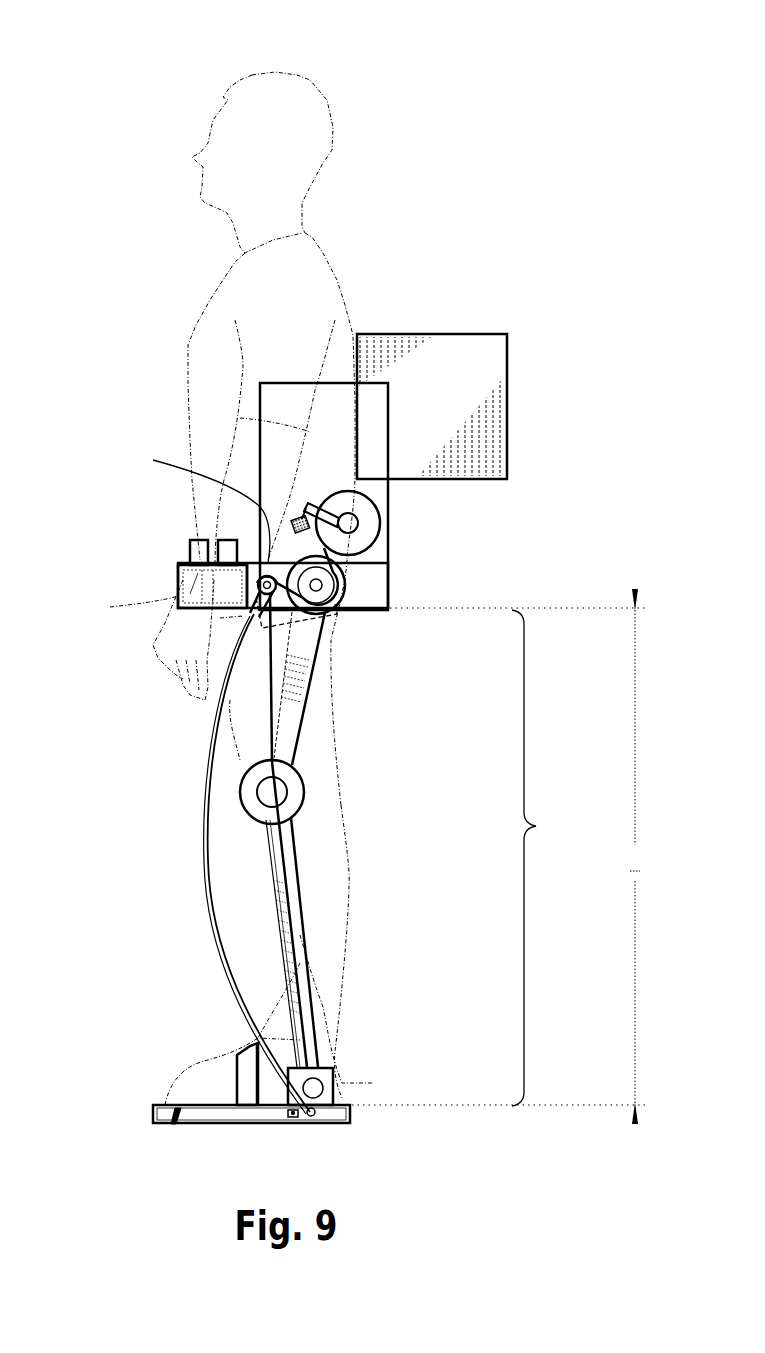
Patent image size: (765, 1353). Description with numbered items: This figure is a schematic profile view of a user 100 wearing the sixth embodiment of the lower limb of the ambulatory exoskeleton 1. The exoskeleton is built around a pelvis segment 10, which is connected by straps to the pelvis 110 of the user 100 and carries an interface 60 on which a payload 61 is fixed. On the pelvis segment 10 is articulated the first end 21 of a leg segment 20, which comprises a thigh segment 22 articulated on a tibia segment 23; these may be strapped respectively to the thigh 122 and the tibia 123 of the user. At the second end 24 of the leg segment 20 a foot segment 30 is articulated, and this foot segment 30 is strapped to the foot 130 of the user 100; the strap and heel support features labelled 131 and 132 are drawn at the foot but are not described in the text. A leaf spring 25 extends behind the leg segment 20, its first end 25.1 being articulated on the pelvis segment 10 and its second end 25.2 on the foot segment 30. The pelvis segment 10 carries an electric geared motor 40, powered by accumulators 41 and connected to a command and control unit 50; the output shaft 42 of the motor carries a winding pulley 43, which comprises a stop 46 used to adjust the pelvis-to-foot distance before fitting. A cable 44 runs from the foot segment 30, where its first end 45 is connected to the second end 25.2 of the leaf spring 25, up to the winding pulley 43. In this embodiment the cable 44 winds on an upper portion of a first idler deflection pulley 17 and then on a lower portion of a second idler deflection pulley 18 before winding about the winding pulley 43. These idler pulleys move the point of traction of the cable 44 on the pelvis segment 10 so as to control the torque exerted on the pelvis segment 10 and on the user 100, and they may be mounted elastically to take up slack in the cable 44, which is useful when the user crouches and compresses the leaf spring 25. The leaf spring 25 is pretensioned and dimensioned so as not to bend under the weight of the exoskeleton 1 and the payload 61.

The user 100 is at (190, 70).
The lower limb of the ambulatory exoskeleton 1 is at (388, 293).
The payload 61 is at (470, 345).
The interface 60 is at (275, 397).
The first idler deflection pulley 17 is at (220, 490).
The pelvis segment 10 is at (178, 583).
The command and control unit 50 is at (228, 541).
The accumulators 41 is at (187, 553).
The electric geared motor 40 is at (380, 508).
The winding pulley 43 is at (358, 521).
The stop 46 is at (307, 504).
The second idler deflection pulley 18 is at (350, 570).
The output shaft 42 is at (356, 530).
The first end of the leaf spring 25.1 is at (257, 588).
The first end of the leg segment 21 is at (353, 616).
The thigh segment 22 is at (300, 719).
The cable 44 is at (306, 793).
The tibia segment 23 is at (280, 903).
The first end of the cable 45 is at (307, 958).
The leaf spring 25 is at (204, 860).
The second end of the leg segment 24 is at (335, 1090).
The second end of the leaf spring 25.2 is at (313, 1123).
The foot segment 30 is at (207, 1112).
The foot strap 131 is at (180, 1124).
The heel support 132 is at (148, 1075).
The foot of the user 130 is at (228, 1062).
The pelvis of the user 110 is at (228, 623).
The thigh of the user 122 is at (232, 698).
The tibia of the user 123 is at (323, 872).
The leg segment 20 is at (498, 857).